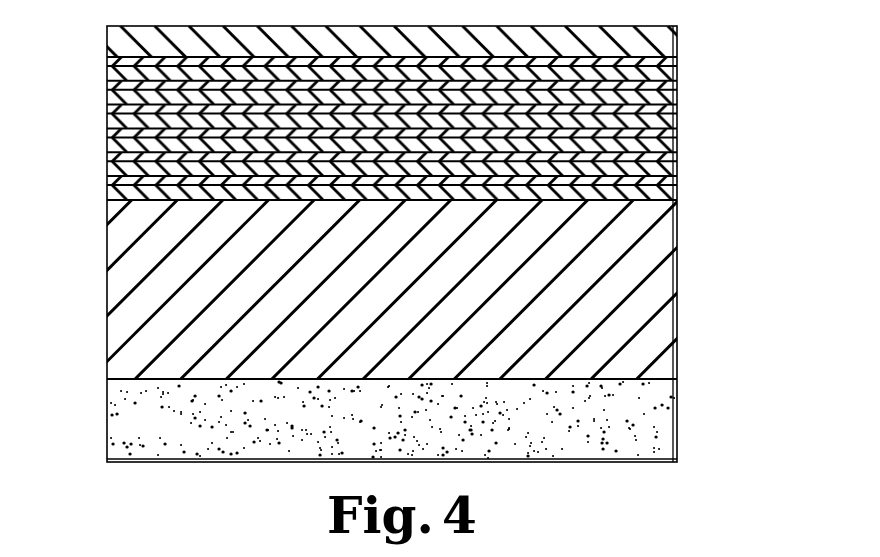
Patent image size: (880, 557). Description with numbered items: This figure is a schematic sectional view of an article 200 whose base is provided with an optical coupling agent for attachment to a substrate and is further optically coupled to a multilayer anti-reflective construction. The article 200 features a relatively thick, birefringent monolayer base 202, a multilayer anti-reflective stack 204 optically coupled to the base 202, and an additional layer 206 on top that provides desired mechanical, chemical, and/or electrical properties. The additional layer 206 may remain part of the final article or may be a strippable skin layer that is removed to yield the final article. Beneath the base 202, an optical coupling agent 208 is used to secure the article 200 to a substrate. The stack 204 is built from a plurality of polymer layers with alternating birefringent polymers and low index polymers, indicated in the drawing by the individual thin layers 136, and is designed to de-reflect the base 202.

The article 200 is at (760, 195).
The birefringent monolayer base 202 is at (635, 322).
The multilayer anti-reflective stack 204 is at (667, 122).
The additional layer 206 is at (665, 42).
The optical coupling agent 208 is at (653, 417).
The thin film layers 136 is at (110, 152).